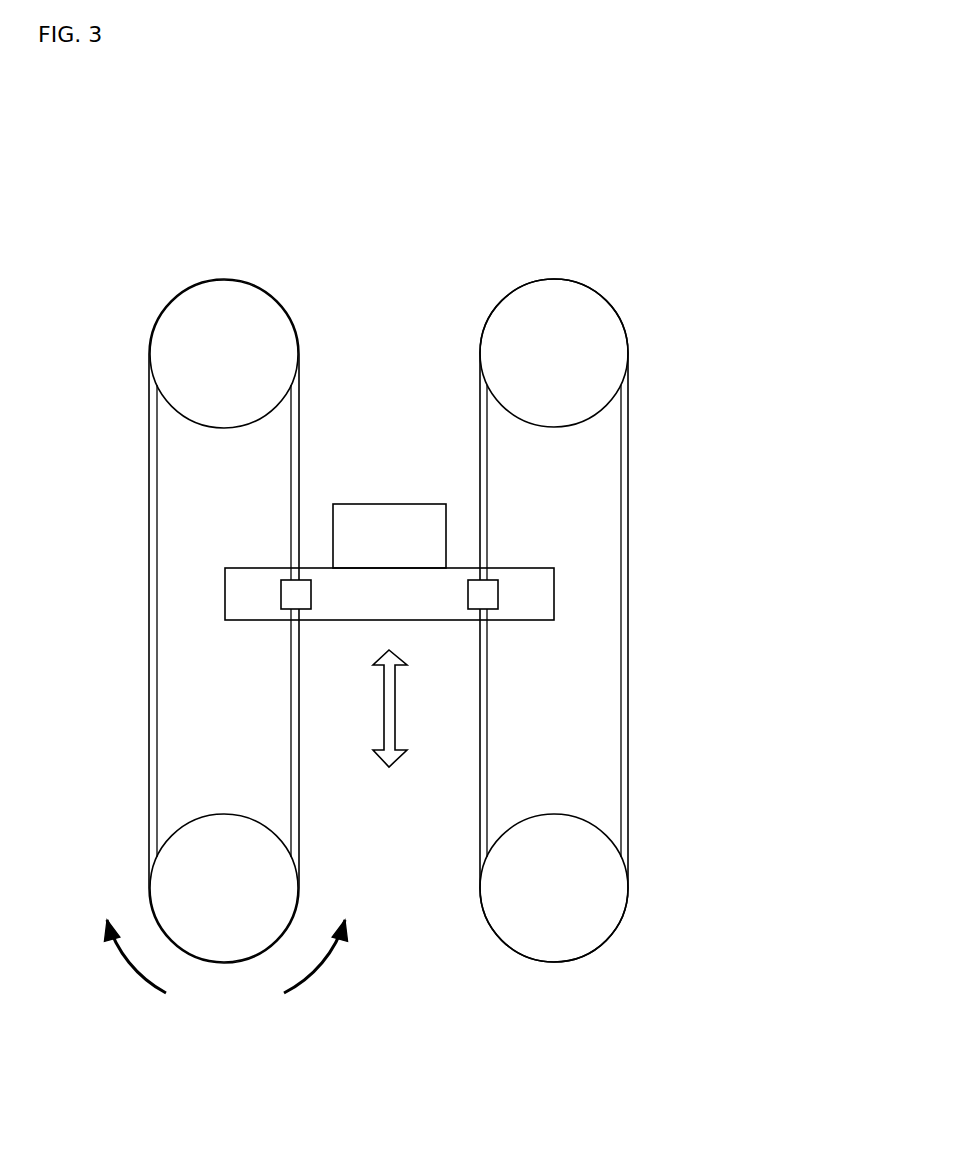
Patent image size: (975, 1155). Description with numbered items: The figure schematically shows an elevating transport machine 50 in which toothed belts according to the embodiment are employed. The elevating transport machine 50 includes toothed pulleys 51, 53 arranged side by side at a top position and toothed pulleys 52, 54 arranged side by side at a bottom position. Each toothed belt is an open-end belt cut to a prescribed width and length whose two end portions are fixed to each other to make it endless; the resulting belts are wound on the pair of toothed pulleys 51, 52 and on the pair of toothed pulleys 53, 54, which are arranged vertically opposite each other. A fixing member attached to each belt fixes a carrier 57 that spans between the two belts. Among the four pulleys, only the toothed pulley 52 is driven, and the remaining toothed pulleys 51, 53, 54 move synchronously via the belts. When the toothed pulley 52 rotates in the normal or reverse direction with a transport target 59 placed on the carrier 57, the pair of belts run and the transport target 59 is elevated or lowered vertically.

The elevating transport machine 50 is at (727, 198).
The toothed pulley 51 is at (203, 282).
The toothed pulley 52 is at (225, 962).
The toothed pulley 53 is at (575, 282).
The toothed pulley 54 is at (572, 962).
The carrier 57 is at (523, 567).
The transport target 59 is at (402, 503).